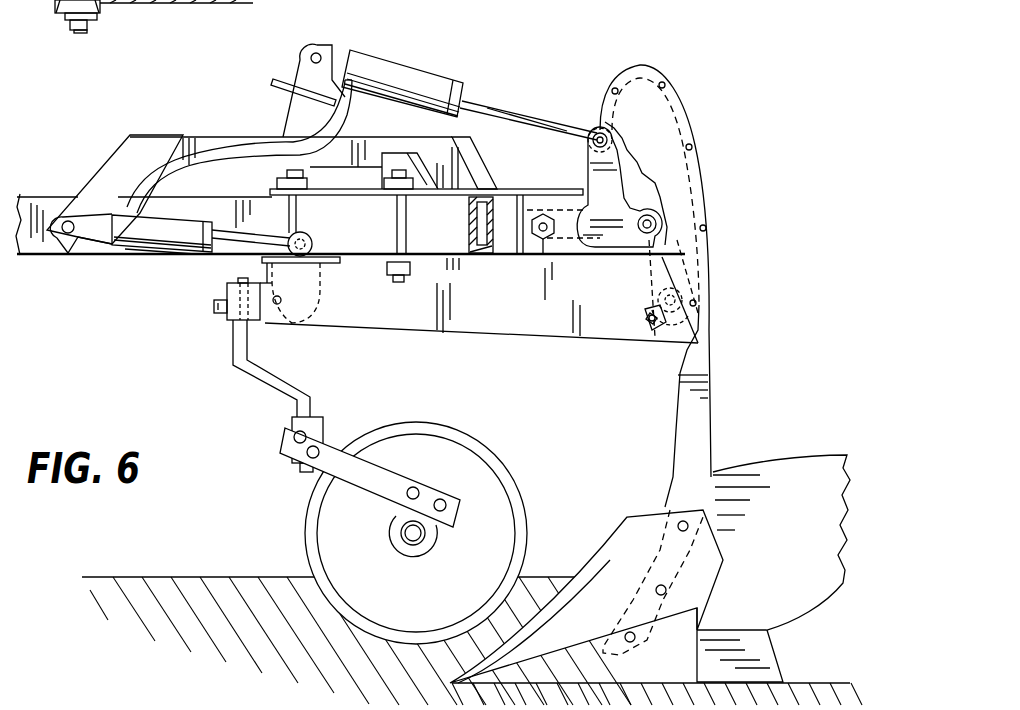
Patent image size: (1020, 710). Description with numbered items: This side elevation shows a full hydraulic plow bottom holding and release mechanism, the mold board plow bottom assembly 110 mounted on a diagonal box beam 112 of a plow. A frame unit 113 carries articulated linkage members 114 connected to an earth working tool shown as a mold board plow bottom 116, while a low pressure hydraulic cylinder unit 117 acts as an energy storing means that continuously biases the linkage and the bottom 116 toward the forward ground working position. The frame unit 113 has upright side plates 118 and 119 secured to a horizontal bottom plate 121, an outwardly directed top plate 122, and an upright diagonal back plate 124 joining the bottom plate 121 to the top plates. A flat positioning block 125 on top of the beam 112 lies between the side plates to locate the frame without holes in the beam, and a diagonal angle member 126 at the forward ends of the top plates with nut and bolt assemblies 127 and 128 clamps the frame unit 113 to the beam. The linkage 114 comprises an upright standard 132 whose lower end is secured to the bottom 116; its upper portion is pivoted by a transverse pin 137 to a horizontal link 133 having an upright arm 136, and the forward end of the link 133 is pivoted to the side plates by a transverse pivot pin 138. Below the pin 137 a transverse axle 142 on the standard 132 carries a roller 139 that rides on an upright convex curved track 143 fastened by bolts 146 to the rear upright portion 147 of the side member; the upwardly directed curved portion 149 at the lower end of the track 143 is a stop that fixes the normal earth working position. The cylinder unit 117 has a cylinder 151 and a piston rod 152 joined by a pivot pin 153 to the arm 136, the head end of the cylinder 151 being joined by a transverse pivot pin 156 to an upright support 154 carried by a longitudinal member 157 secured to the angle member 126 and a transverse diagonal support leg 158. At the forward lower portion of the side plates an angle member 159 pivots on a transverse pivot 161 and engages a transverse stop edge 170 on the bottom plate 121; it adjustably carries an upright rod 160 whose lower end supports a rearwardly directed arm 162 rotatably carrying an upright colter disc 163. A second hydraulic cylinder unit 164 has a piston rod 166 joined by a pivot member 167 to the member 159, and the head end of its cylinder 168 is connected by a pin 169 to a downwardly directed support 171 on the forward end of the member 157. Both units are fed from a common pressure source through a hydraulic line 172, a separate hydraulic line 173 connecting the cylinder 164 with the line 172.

The mold board plow bottom assembly 110 is at (530, 40).
The diagonal box beam 112 is at (33, 207).
The frame unit 113 is at (690, 120).
The articulated linkage members 114 is at (715, 373).
The mold board plow bottom 116 is at (780, 473).
The hydraulic cylinder unit 117 is at (436, 65).
The side member 118 is at (530, 330).
The side member 119 is at (640, 182).
The bottom plate 121 is at (168, 0).
The top plate 122 is at (513, 189).
The back plate 124 is at (503, 243).
The positioning block 125 is at (292, 208).
The diagonal angle member 126 is at (370, 173).
The nut and bolt assembly 127 is at (388, 277).
The nut and bolt assembly 128 is at (275, 180).
The standard 132 is at (703, 408).
The link 133 is at (613, 230).
The upright arm 136 is at (571, 128).
The transverse pin 137 is at (660, 216).
The transverse pivot pin 138 is at (541, 240).
The roller 139 is at (652, 300).
The transverse axle 142 is at (676, 298).
The track 143 is at (713, 247).
The bolts 146 is at (663, 83).
The rear upright portion 147 is at (658, 112).
The curved portion 149 is at (657, 333).
The cylinder 151 is at (392, 66).
The piston rod 152 is at (497, 110).
The pivot pin 153 is at (600, 132).
The upright support 154 is at (303, 80).
The transverse pivot pin 156 is at (318, 52).
The longitudinal member 157 is at (200, 137).
The transverse diagonal support leg 158 is at (463, 170).
The angle member 159 is at (227, 295).
The upright rod 160 is at (265, 388).
The transverse pivot 161 is at (279, 308).
The rearwardly directed arm 162 is at (363, 472).
The colter disc 163 is at (490, 525).
The hydraulic cylinder unit 164 is at (128, 258).
The piston rod 166 is at (233, 243).
The pivot member 167 is at (306, 232).
The cylinder 168 is at (160, 245).
The pin 169 is at (64, 238).
The transverse stop edge 170 is at (333, 272).
The downwardly directed projection 171 is at (118, 160).
The hydraulic line 172 is at (303, 98).
The hydraulic line 173 is at (233, 157).